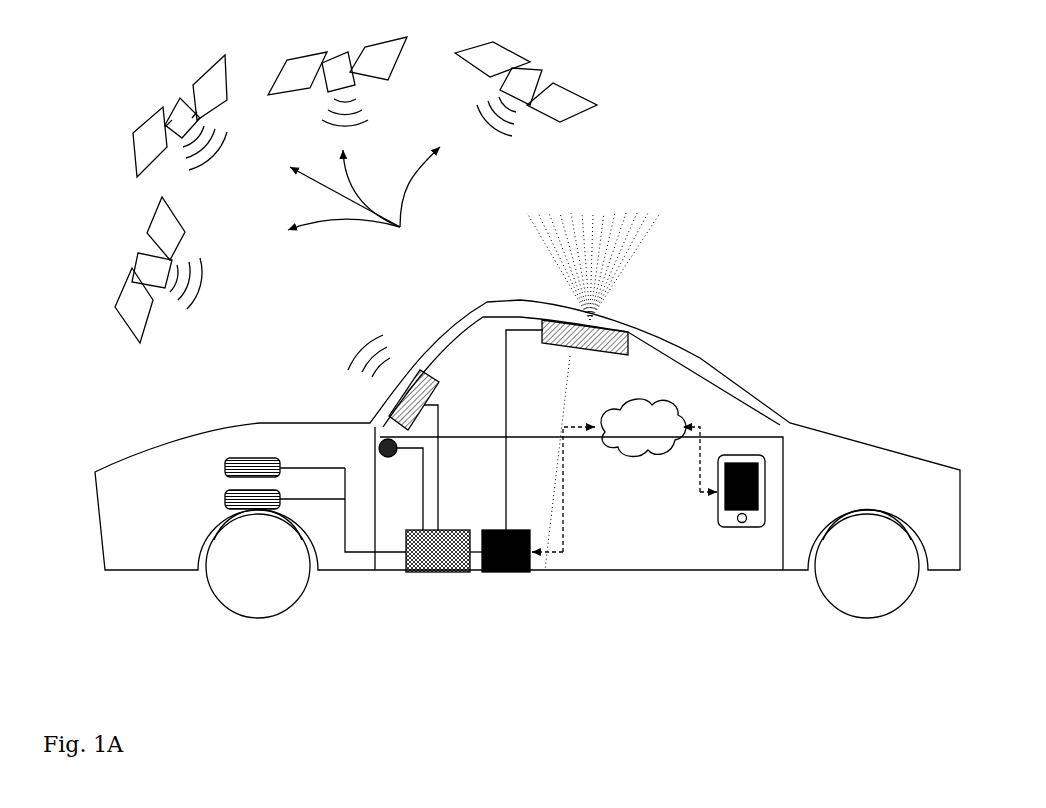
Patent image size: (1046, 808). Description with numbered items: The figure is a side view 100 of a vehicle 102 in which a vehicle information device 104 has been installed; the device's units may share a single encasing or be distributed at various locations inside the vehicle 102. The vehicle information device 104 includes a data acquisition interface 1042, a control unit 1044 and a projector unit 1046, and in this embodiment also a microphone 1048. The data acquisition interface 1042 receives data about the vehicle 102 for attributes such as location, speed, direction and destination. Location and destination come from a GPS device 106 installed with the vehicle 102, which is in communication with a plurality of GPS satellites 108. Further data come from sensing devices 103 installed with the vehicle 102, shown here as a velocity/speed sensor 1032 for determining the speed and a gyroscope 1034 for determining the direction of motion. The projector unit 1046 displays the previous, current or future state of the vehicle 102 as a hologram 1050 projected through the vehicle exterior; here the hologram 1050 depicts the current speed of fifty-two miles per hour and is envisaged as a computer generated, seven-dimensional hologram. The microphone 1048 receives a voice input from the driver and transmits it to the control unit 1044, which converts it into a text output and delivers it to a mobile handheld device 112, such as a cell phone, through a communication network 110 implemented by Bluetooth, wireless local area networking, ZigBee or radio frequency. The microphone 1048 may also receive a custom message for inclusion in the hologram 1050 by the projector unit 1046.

The side view 100 is at (83, 120).
The vehicle 102 is at (260, 423).
The sensing devices 103 is at (160, 520).
The vehicle information device 104 is at (618, 533).
The GPS device 106 is at (442, 368).
The GPS satellites 108 is at (364, 199).
The communication network 110 is at (638, 457).
The mobile handheld device 112 is at (720, 508).
The velocity/speed sensor 1032 is at (225, 468).
The gyroscope 1034 is at (225, 499).
The data acquisition interface 1042 is at (403, 558).
The control unit 1044 is at (537, 558).
The projector unit 1046 is at (628, 355).
The microphone 1048 is at (380, 462).
The hologram 1050 is at (616, 197).